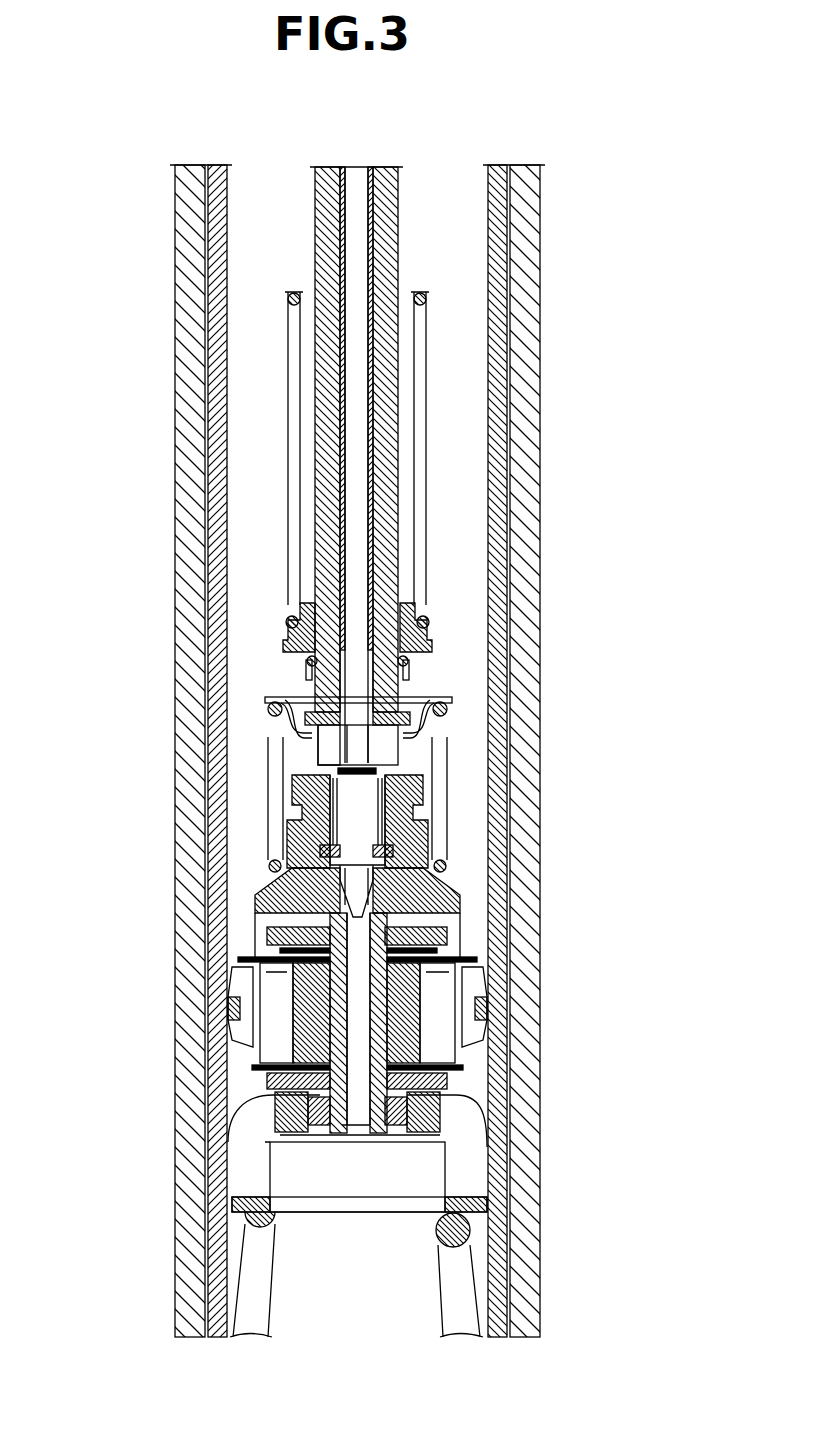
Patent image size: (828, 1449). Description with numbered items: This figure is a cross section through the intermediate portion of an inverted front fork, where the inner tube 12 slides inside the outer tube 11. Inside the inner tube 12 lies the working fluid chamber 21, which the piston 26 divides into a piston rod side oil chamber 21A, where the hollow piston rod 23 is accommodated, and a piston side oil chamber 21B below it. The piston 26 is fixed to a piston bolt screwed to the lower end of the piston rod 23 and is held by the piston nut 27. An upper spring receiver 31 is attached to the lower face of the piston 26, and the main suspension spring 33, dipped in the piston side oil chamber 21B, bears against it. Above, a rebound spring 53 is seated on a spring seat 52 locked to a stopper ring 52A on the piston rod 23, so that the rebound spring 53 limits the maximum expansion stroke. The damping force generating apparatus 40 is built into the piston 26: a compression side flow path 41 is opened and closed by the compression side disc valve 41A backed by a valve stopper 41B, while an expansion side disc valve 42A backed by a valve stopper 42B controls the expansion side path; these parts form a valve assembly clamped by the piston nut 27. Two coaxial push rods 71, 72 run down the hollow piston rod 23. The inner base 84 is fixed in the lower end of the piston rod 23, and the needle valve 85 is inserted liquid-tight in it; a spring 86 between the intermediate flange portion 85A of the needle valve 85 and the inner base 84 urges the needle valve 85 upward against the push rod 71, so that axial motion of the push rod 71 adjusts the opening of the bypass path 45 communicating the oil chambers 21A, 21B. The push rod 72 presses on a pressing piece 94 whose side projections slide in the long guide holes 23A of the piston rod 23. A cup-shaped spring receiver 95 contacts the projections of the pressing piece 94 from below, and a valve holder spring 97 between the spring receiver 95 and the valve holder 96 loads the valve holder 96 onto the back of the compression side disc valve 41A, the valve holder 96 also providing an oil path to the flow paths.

The outer tube 11 is at (182, 200).
The inner tube 12 is at (221, 259).
The working fluid chamber 21 is at (250, 350).
The piston rod side oil chamber 21A is at (250, 390).
The piston side oil chamber 21B is at (290, 1295).
The piston rod 23 is at (390, 250).
The guide hole 23A is at (392, 750).
The piston 26 is at (478, 1000).
The piston nut 27 is at (275, 1140).
The upper spring receiver 31 is at (240, 1198).
The main suspension spring 33 is at (258, 1226).
The damping force generating apparatus 40 is at (252, 1081).
The compression side flow path 41 is at (270, 1010).
The compression side disc valve 41A is at (275, 962).
The valve stopper 41B is at (268, 940).
The expansion side disc valve 42A is at (445, 1058).
The valve stopper 42B is at (447, 1080).
The bypass path 45 is at (355, 1035).
The spring seat 52 is at (287, 645).
The stopper ring 52A is at (308, 663).
The rebound spring 53 is at (290, 292).
The push rod 71 is at (357, 183).
The push rod 72 is at (372, 213).
The inner base 84 is at (320, 840).
The needle valve 85 is at (352, 888).
The intermediate flange portion 85A is at (315, 752).
The spring 86 is at (325, 795).
The pressing piece 94 is at (412, 700).
The spring receiver 95 is at (452, 698).
The valve holder 96 is at (447, 888).
The valve holder spring 97 is at (420, 714).